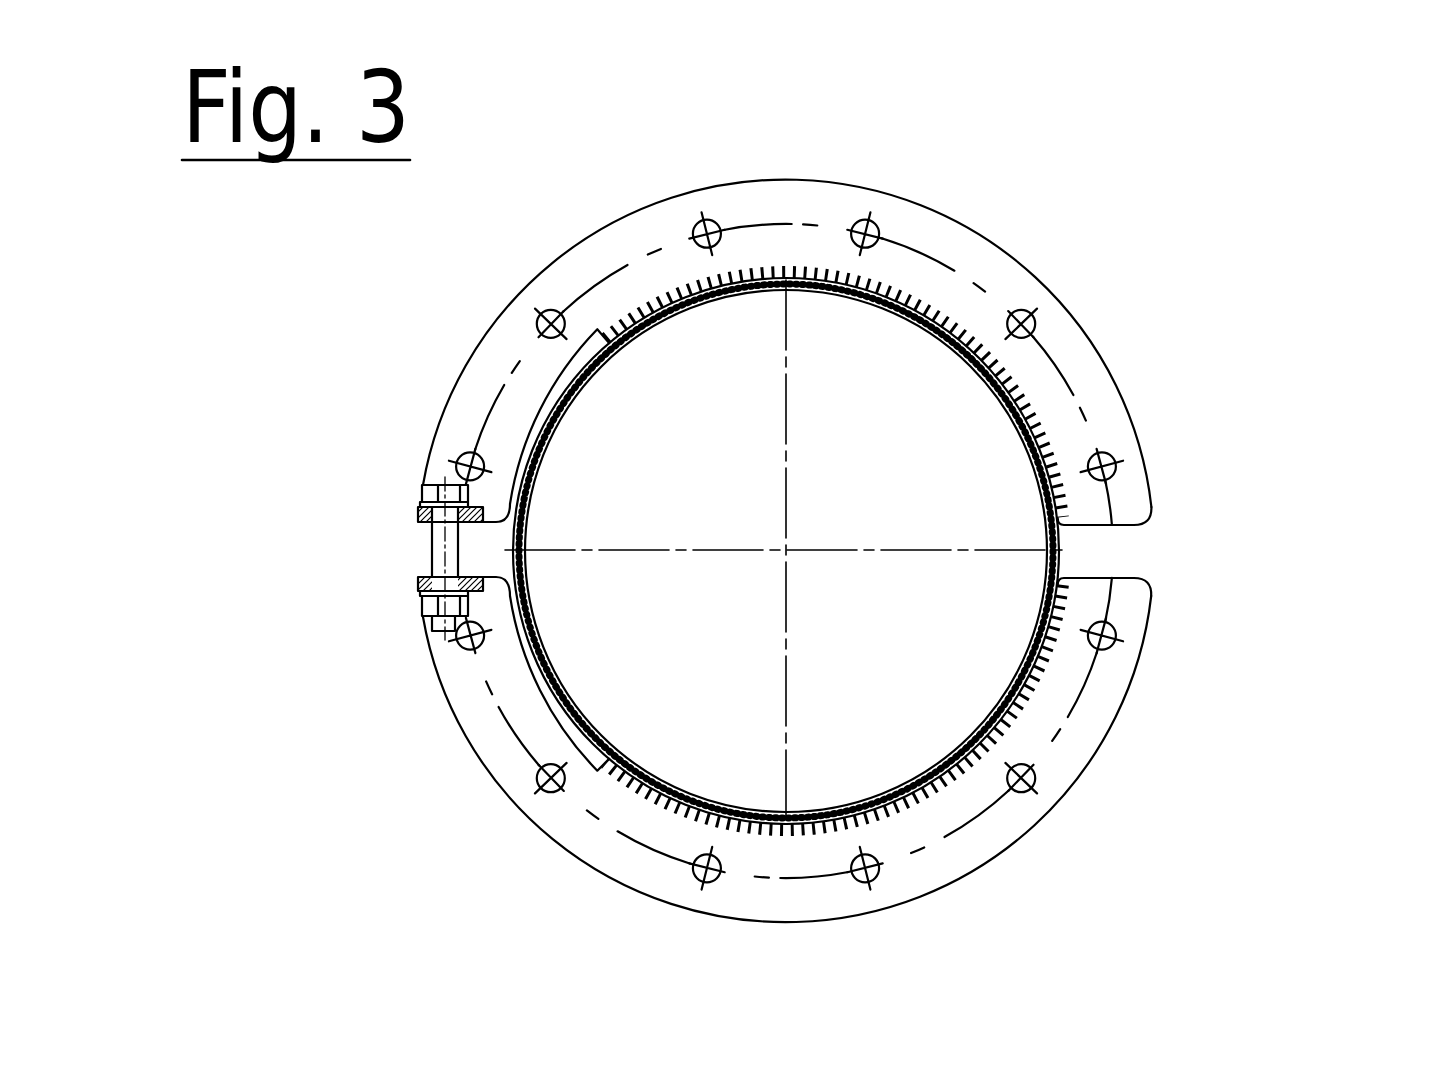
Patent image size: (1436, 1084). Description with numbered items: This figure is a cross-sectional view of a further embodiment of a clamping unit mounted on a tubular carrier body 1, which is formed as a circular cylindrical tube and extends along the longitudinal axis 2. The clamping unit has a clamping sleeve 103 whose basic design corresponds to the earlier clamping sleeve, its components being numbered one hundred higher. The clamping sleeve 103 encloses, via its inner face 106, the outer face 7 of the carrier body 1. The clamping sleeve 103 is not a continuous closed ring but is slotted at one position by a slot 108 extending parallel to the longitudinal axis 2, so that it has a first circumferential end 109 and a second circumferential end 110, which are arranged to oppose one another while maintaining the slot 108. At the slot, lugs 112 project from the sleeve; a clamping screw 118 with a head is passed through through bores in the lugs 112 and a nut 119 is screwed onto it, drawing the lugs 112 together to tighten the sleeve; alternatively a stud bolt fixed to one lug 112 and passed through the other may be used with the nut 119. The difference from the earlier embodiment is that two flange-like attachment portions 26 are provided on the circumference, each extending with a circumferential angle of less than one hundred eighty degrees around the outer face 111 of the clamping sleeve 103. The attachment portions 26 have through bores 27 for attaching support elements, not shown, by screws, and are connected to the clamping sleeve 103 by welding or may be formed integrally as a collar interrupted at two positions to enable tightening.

The carrier body 1 is at (695, 300).
The longitudinal axis 2 is at (790, 545).
The outer face of the carrier body 7 is at (950, 597).
The flange-like attachment portions 26 is at (1128, 615).
The through bores 27 is at (1117, 458).
The clamping sleeve 103 is at (1037, 411).
The inner face of the clamping sleeve 106 is at (1024, 665).
The slot 108 is at (525, 542).
The first circumferential end 109 is at (525, 540).
The second circumferential end 110 is at (525, 562).
The outer face of the clamping sleeve 111 is at (772, 551).
The lugs 112 is at (527, 650).
The clamping screw 118 is at (423, 492).
The nut 119 is at (421, 609).